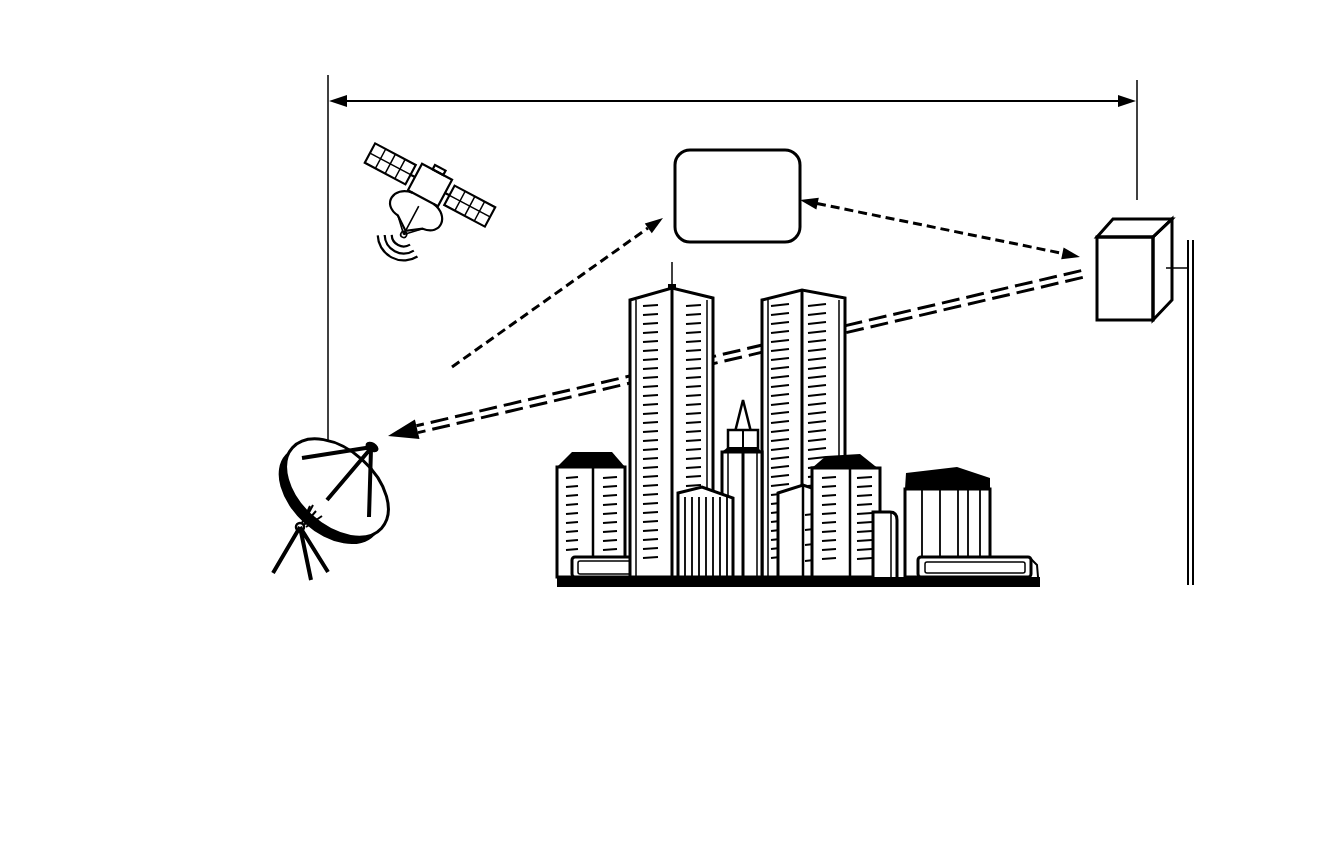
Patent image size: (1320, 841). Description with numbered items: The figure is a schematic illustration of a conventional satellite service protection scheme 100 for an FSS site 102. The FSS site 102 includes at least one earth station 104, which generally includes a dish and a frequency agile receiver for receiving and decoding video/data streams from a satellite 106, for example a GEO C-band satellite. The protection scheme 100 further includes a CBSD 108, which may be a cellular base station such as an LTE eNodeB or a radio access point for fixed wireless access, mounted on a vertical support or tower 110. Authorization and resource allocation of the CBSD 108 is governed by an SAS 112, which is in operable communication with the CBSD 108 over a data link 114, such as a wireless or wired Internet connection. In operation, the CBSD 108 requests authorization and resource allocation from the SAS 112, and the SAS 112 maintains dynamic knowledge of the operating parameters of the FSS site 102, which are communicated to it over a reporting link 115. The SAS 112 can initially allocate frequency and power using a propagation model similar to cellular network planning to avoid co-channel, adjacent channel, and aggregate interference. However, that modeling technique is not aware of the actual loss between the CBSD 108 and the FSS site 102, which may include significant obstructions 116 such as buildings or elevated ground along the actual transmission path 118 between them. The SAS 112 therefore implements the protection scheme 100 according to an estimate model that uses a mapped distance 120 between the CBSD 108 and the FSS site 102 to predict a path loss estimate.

The satellite service protection scheme 100 is at (1190, 114).
The FSS site 102 is at (360, 462).
The earth station 104 is at (290, 456).
The satellite 106 is at (495, 197).
The CBSD 108 is at (1110, 301).
The tower 110 is at (1196, 440).
The SAS 112 is at (723, 226).
The data link 114 is at (932, 223).
The reporting link 115 is at (530, 308).
The obstructions 116 is at (880, 468).
The actual transmission path 118 is at (943, 310).
The mapped distance 120 is at (762, 90).